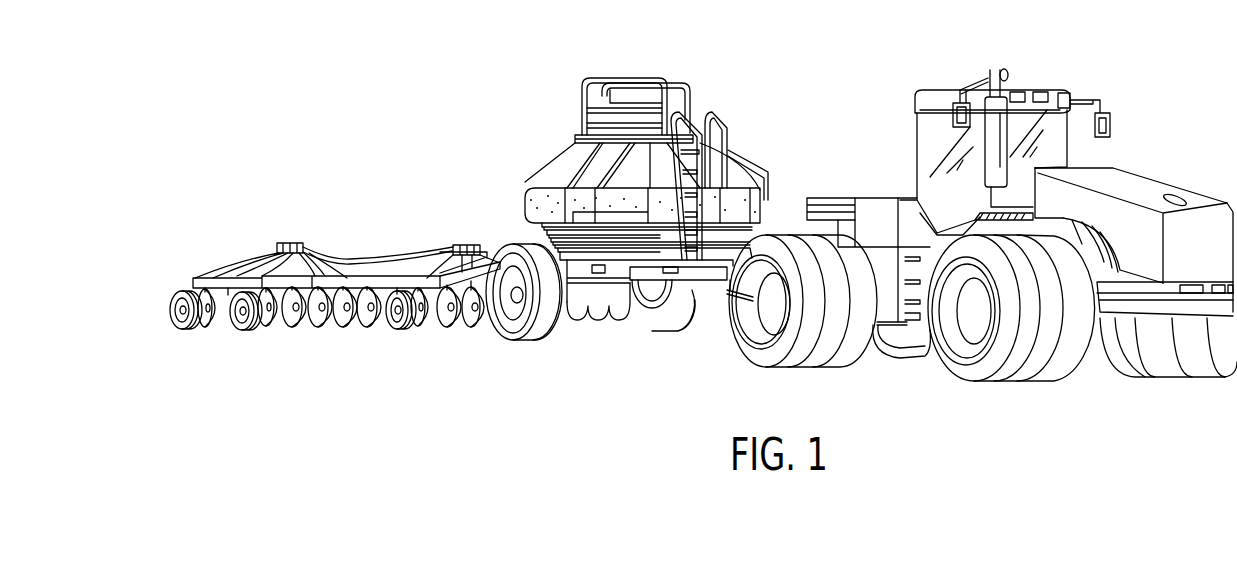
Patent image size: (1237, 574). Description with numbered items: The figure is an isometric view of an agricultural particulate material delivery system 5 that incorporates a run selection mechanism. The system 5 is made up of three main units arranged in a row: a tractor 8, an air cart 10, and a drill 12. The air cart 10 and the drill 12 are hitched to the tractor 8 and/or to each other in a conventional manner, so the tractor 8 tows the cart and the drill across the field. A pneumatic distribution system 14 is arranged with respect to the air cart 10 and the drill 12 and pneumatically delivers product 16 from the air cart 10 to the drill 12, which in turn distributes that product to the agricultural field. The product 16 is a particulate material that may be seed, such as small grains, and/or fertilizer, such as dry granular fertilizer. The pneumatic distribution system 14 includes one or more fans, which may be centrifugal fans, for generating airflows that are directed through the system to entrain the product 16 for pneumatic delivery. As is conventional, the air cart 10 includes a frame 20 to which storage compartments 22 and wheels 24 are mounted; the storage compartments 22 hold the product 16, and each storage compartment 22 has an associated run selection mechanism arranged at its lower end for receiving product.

The agricultural particulate material delivery system 5 is at (879, 39).
The tractor 8 is at (1187, 184).
The air cart 10 is at (695, 75).
The drill 12 is at (352, 162).
The pneumatic distribution system 14 is at (478, 229).
The product 16 is at (541, 190).
The frame 20 is at (640, 275).
The storage compartments 22 is at (572, 157).
The wheels 24 is at (540, 328).